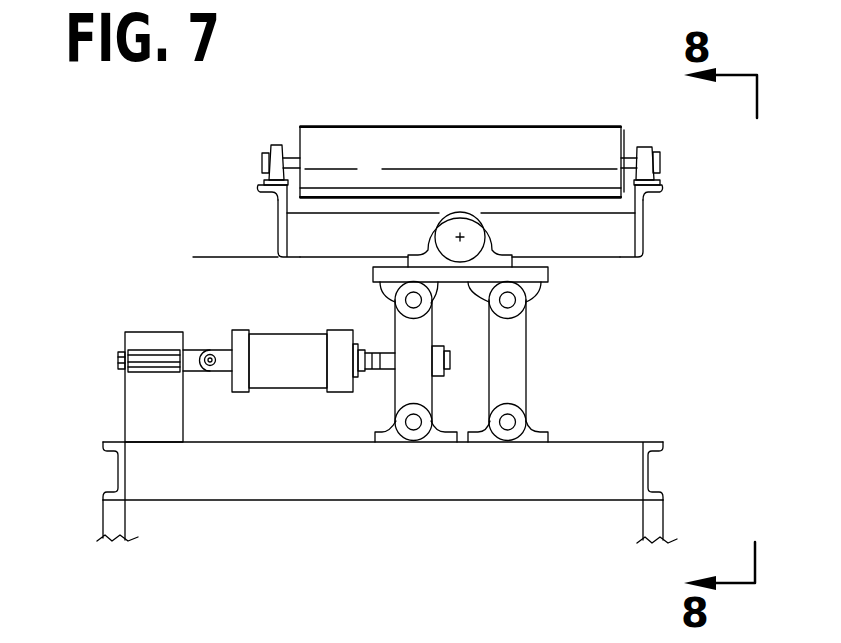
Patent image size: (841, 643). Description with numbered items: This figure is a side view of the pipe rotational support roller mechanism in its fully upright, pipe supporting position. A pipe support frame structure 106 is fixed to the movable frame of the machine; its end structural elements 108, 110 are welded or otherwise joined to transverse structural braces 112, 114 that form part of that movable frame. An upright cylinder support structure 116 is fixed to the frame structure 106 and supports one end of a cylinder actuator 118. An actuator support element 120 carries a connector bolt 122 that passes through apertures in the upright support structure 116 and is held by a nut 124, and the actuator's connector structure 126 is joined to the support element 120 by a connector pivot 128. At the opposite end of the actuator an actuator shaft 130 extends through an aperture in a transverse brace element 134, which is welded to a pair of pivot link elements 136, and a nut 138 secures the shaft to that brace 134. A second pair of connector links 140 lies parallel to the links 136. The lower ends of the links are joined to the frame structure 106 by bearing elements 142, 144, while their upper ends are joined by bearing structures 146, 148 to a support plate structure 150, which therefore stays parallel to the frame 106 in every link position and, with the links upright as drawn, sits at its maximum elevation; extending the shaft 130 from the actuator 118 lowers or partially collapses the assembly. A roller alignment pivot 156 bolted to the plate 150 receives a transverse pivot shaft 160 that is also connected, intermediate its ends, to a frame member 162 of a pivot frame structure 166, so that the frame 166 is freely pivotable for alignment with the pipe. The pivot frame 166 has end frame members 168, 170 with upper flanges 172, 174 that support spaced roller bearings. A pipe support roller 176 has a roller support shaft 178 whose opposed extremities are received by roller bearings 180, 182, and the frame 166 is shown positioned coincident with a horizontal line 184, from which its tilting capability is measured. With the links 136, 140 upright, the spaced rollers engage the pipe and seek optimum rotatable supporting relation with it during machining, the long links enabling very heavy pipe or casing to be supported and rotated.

The pipe support frame structure 106 is at (620, 440).
The end structural element 108 is at (118, 472).
The end structural element 110 is at (650, 474).
The transverse structural brace 112 is at (126, 518).
The transverse structural brace 114 is at (665, 508).
The upright cylinder support structure 116 is at (125, 400).
The cylinder actuator 118 is at (297, 388).
The actuator support element 120 is at (197, 350).
The connector bolt 122 is at (152, 350).
The nut 124 is at (118, 352).
The connector structure 126 is at (225, 369).
The connector pivot 128 is at (211, 355).
The actuator shaft 130 is at (367, 373).
The transverse brace element 134 is at (437, 373).
The pivot link elements 136 is at (433, 333).
The nut 138 is at (449, 358).
The connector links 140 is at (527, 363).
The bearing element 142 is at (432, 422).
The bearing element 144 is at (527, 420).
The bearing structure 146 is at (390, 298).
The bearing structure 148 is at (529, 300).
The support plate structure 150 is at (548, 276).
The roller alignment pivot 156 is at (492, 232).
The transverse pivot shaft 160 is at (457, 236).
The frame member 162 is at (617, 245).
The pivot frame structure 166 is at (310, 258).
The end frame member 168 is at (278, 240).
The end frame member 170 is at (644, 231).
The upper flange 172 is at (268, 195).
The upper flange 174 is at (654, 195).
The pipe support roller 176 is at (494, 142).
The roller support shaft 178 is at (627, 152).
The roller bearing 180 is at (273, 147).
The roller bearing 182 is at (652, 150).
The horizontal line 184 is at (199, 257).